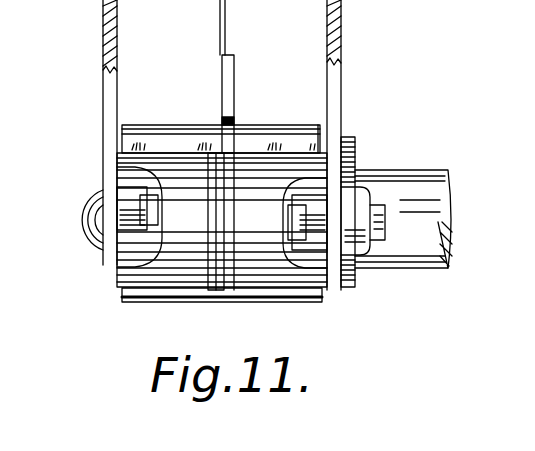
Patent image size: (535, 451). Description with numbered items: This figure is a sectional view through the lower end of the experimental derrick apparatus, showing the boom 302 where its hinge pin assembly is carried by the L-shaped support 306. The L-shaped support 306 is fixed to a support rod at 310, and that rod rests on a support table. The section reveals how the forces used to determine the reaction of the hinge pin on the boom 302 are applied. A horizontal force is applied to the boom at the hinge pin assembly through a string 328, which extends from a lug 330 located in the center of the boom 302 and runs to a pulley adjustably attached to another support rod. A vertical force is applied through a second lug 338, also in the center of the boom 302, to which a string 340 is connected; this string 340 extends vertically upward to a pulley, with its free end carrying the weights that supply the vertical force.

The boom 302 is at (110, 88).
The L-shaped support 306 is at (292, 135).
The fixing location of L-shaped support to support rod 310 is at (341, 290).
The string 328 is at (209, 223).
The lug 330 is at (210, 289).
The lug 338 is at (229, 106).
The string 340 is at (236, 63).